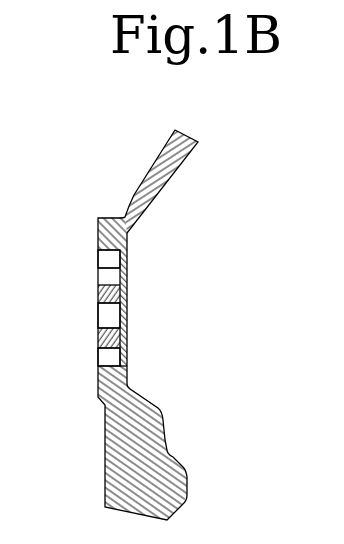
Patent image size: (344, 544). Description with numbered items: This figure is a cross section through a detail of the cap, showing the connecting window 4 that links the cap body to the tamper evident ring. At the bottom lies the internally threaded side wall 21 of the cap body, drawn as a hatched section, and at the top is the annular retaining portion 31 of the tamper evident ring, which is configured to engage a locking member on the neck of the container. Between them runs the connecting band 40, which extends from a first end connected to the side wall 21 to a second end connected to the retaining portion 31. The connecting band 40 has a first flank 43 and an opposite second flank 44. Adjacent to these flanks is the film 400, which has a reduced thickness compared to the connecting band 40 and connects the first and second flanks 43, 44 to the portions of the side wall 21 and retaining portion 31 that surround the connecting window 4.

The connecting window 4 is at (90, 275).
The retaining portion 31 is at (164, 147).
The connecting band 40 is at (98, 290).
The film 400 is at (127, 268).
The first flank 43 is at (114, 351).
The second flank 44 is at (124, 320).
The side wall 21 is at (135, 455).